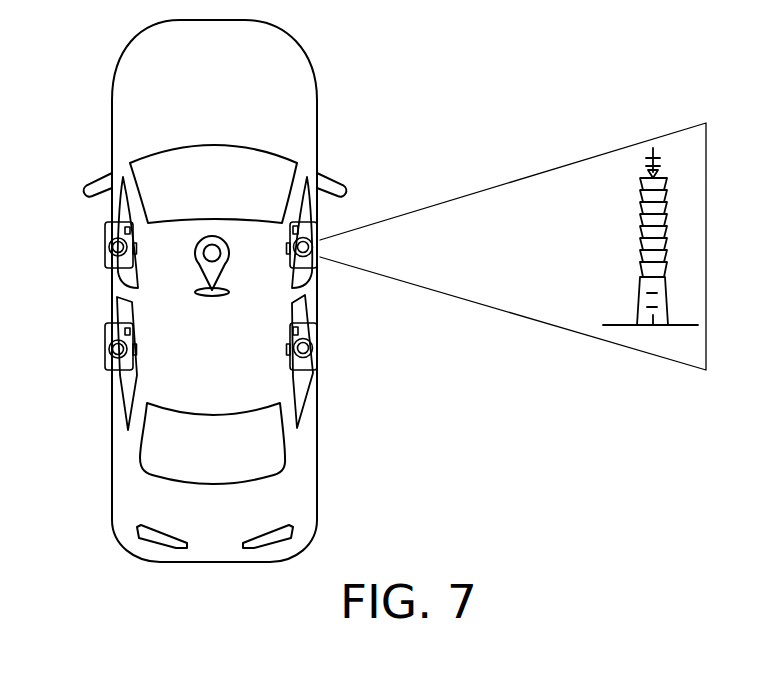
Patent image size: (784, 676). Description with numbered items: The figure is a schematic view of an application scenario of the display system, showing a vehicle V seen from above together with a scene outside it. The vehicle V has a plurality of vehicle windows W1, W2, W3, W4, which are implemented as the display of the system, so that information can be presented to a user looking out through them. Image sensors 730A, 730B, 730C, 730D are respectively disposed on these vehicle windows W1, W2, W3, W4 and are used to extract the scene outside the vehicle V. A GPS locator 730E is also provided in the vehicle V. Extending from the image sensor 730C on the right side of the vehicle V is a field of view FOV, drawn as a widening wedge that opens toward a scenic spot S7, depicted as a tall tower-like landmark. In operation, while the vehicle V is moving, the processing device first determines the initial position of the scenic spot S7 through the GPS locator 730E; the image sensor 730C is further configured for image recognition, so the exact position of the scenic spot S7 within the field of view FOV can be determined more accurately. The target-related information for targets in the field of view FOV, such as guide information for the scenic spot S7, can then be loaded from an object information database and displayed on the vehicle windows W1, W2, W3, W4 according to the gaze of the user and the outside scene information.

The vehicle V is at (318, 105).
The vehicle window W1 is at (118, 175).
The vehicle window W2 is at (311, 174).
The vehicle window W3 is at (130, 397).
The vehicle window W4 is at (305, 310).
The image sensor 730A is at (105, 247).
The image sensor 730B is at (105, 349).
The image sensor 730C is at (320, 244).
The image sensor 730D is at (317, 349).
The GPS locator 730E is at (212, 297).
The field of view FOV is at (545, 212).
The scenic spot S7 is at (667, 198).